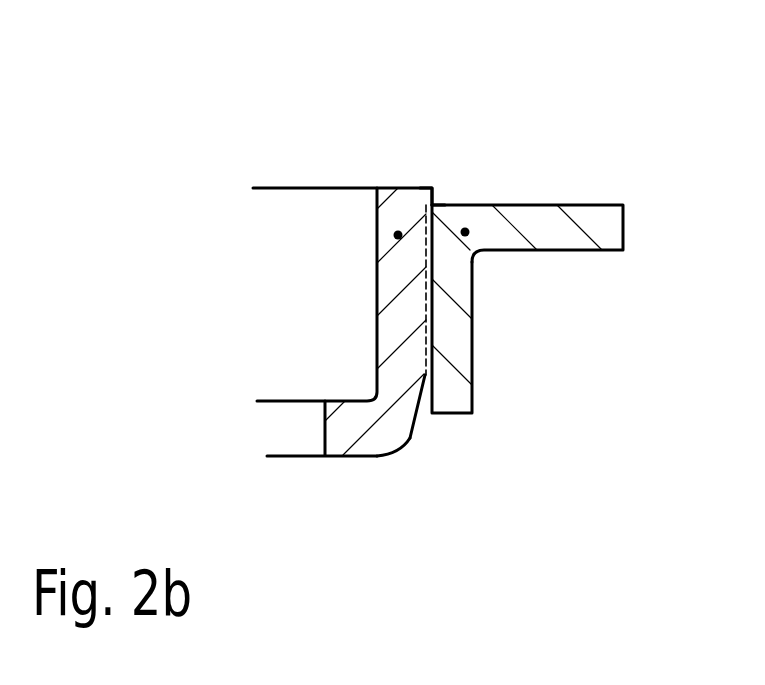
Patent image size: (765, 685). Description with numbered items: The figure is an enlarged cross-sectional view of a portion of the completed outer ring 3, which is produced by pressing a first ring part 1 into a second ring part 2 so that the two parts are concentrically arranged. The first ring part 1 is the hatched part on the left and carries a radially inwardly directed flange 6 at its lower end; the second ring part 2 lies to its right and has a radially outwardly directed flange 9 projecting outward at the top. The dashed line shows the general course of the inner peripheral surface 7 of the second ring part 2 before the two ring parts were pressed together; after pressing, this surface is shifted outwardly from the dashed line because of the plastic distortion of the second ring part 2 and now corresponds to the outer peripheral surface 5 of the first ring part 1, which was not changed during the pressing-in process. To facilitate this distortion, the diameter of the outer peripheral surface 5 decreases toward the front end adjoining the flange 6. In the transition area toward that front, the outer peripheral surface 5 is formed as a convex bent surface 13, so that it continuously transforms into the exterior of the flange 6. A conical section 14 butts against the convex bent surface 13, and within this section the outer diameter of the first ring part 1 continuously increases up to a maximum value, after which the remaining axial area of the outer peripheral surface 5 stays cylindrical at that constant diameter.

The first ring part 1 is at (398, 235).
The second ring part 2 is at (544, 244).
The outer ring 3 is at (457, 143).
The outer peripheral surface 5 is at (434, 328).
The radially inwardly directed flange 6 is at (343, 432).
The inner peripheral surface 7 is at (425, 287).
The radially outwardly directed flange 9 is at (562, 223).
The convex bent surface 13 is at (403, 449).
The conical section 14 is at (417, 423).